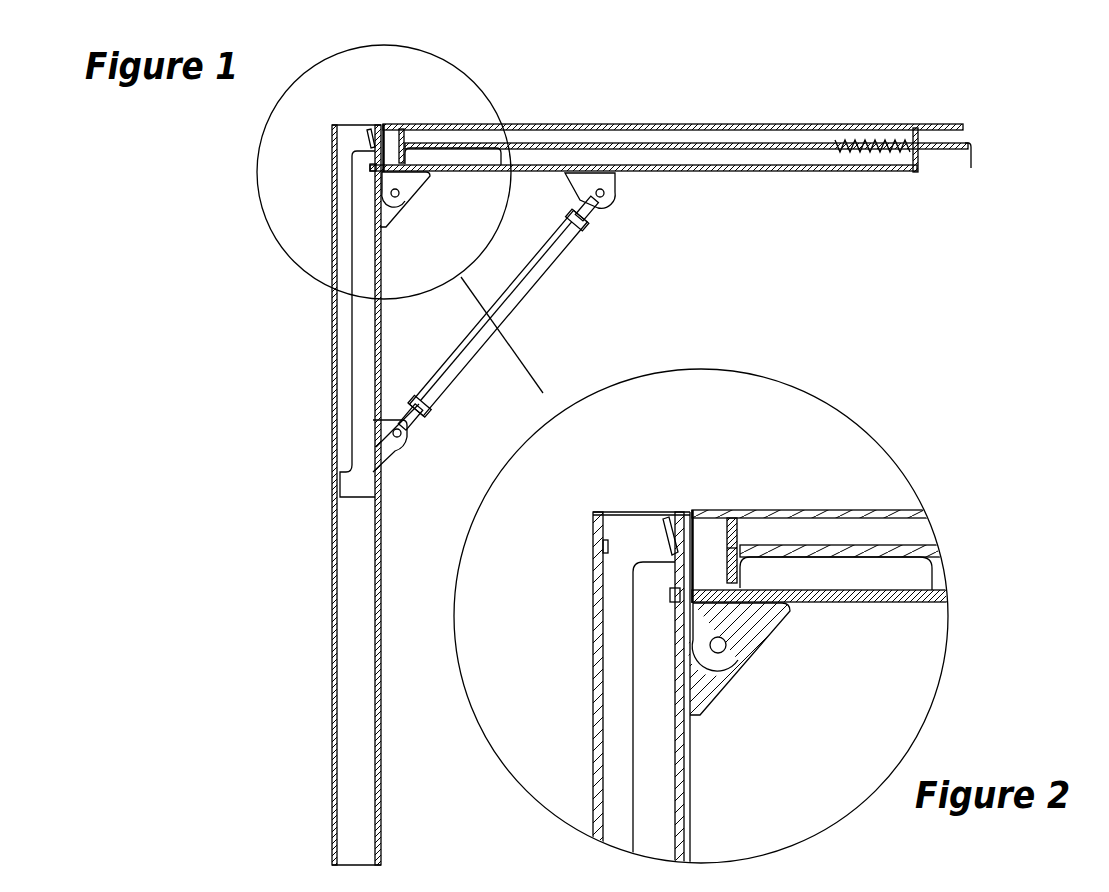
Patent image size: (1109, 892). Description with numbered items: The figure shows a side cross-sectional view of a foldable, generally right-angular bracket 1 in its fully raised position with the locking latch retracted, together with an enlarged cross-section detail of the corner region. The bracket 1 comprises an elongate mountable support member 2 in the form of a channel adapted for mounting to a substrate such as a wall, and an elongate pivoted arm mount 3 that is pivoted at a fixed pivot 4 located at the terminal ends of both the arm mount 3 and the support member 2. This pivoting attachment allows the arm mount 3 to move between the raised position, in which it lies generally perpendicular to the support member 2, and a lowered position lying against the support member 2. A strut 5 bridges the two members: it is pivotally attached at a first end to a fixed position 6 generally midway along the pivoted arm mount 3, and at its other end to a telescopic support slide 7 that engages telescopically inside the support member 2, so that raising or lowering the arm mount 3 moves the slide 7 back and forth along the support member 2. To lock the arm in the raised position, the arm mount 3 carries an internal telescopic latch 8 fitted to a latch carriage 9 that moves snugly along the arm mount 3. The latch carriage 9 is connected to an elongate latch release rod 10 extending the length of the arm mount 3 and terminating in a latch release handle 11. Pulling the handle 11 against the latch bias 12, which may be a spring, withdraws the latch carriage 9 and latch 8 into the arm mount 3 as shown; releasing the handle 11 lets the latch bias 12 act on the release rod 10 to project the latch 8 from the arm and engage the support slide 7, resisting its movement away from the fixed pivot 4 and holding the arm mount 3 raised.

In FIG. 1, the bracket 1 is at (285, 170).
In FIG. 1, the mountable support member 2 is at (332, 712).
In FIG. 2, the mountable support member 2 is at (641, 692).
In FIG. 1, the pivoted arm mount 3 is at (718, 125).
In FIG. 2, the pivoted arm mount 3 is at (827, 556).
In FIG. 1, the fixed pivot 4 is at (342, 242).
In FIG. 2, the fixed pivot 4 is at (733, 650).
In FIG. 1, the strut 5 is at (523, 308).
In FIG. 1, the fixed position 6 is at (612, 190).
In FIG. 1, the telescopic support slide 7 is at (350, 500).
In FIG. 1, the telescopic latch 8 is at (402, 150).
In FIG. 2, the telescopic latch 8 is at (706, 587).
In FIG. 1, the latch carriage 9 is at (503, 150).
In FIG. 2, the latch carriage 9 is at (940, 570).
In FIG. 1, the latch release rod 10 is at (655, 147).
In FIG. 2, the latch release rod 10 is at (850, 551).
In FIG. 1, the latch release handle 11 is at (975, 150).
In FIG. 1, the latch bias 12 is at (868, 142).